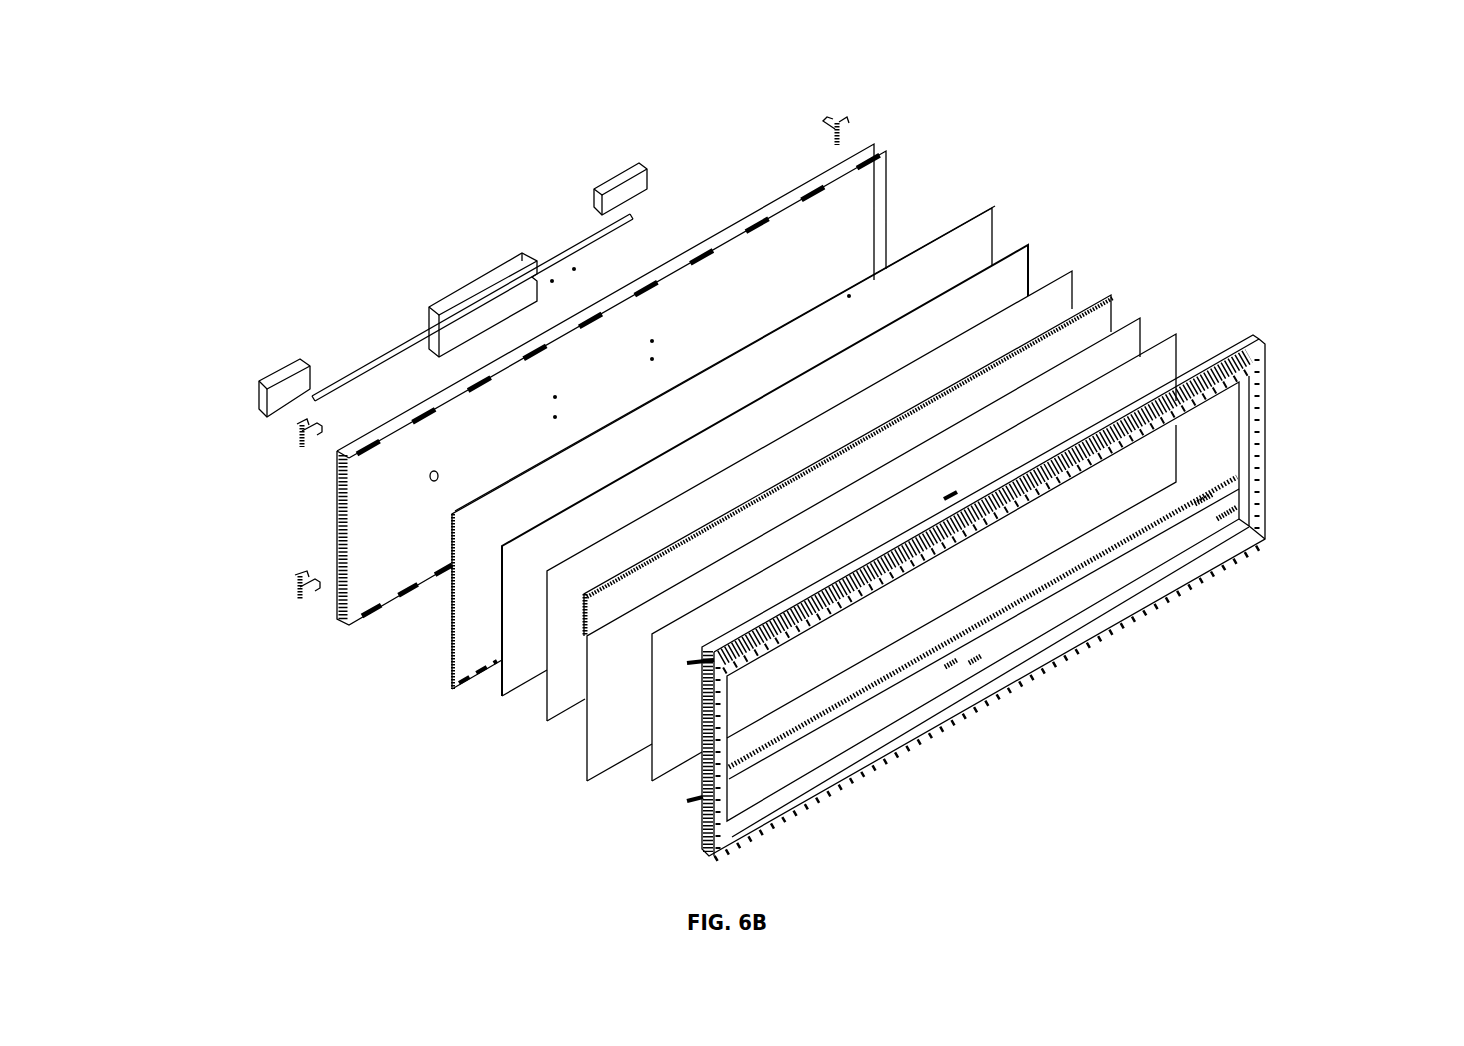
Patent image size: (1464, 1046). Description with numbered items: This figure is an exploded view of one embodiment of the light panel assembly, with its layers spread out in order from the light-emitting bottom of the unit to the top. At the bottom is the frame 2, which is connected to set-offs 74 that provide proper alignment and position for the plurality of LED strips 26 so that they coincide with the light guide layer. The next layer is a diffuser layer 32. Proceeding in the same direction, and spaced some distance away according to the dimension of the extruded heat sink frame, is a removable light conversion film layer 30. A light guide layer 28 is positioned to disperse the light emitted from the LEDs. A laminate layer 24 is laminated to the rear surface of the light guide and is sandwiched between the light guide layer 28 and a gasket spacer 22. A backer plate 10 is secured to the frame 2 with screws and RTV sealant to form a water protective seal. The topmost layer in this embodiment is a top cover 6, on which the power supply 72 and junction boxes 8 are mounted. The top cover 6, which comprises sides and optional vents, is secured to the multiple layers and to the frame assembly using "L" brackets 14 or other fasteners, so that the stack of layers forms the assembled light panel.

The frame 2 is at (741, 844).
The top cover 6 is at (336, 533).
The junction boxes 8 is at (613, 179).
The backer plate 10 is at (453, 622).
The "L" brackets 14 is at (300, 443).
The gasket spacer 22 is at (503, 645).
The laminate layer 24 is at (549, 693).
The LED strips 26 is at (1206, 346).
The light guide layer 28 is at (1115, 317).
The removable light conversion film layer 30 is at (585, 737).
The diffuser layer 32 is at (652, 763).
The power supply 72 is at (473, 283).
The set-offs 74 is at (1238, 500).